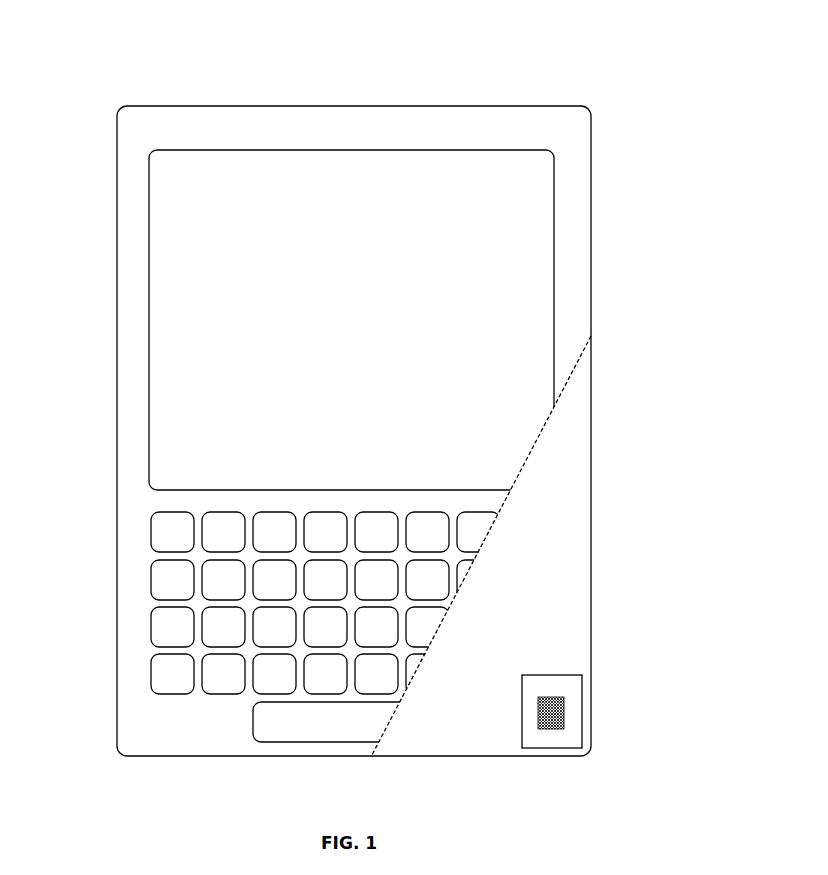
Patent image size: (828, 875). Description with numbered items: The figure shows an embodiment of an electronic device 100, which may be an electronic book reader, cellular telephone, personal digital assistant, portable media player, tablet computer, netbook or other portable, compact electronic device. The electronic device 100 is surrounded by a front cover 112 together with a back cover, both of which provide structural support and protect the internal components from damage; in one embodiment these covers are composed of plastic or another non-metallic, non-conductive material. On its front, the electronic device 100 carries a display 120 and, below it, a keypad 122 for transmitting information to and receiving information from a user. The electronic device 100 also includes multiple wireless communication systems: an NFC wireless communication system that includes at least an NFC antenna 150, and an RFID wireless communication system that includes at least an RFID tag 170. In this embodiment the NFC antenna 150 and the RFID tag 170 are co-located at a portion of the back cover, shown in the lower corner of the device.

The electronic device 100 is at (372, 401).
The front cover 112 is at (573, 560).
The display 120 is at (149, 229).
The keypad 122 is at (152, 622).
The NFC antenna 150 is at (582, 684).
The RFID tag 170 is at (564, 718).